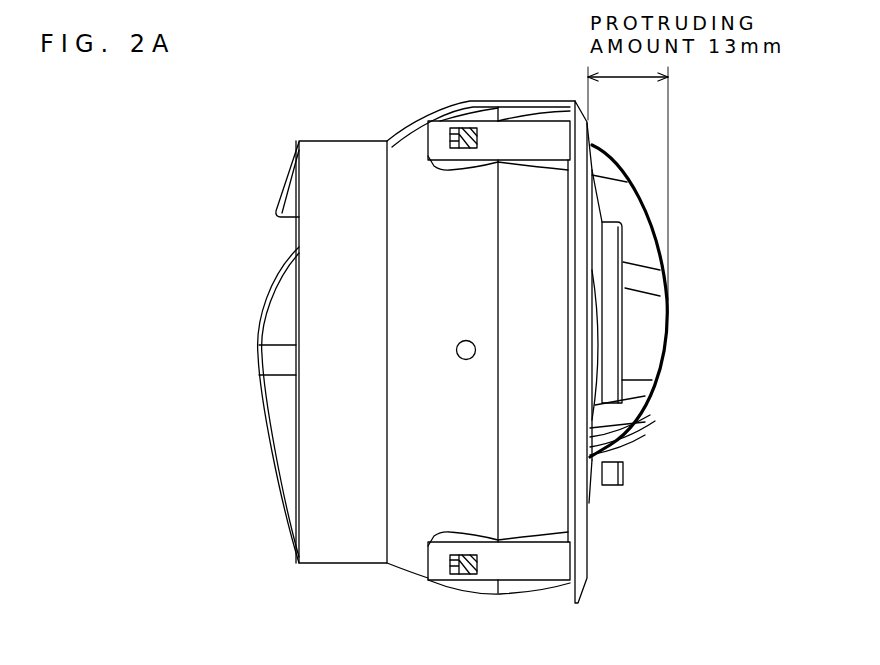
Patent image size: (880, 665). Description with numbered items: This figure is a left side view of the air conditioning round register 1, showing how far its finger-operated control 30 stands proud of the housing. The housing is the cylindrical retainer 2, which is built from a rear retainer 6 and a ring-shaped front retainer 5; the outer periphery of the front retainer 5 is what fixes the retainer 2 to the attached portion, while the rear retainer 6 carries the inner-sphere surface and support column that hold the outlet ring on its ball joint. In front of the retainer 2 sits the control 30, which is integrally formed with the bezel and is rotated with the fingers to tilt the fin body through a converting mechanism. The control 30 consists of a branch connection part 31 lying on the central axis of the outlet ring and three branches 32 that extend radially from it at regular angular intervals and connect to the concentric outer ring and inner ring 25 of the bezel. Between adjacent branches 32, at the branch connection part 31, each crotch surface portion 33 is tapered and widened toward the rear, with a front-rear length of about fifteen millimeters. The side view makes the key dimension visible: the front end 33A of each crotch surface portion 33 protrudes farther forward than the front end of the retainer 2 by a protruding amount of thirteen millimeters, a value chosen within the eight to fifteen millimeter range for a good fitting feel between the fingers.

The air conditioning round register 1 is at (697, 131).
The retainer 2 is at (543, 58).
The front retainer 5 is at (532, 114).
The rear retainer 6 is at (479, 114).
The inner ring 25 is at (613, 470).
The control 30 is at (739, 252).
The branch connection part 31 is at (670, 342).
The branches 32 is at (653, 230).
The crotch surface portion 33 is at (645, 361).
The front end of crotch surface portion 33A is at (667, 356).